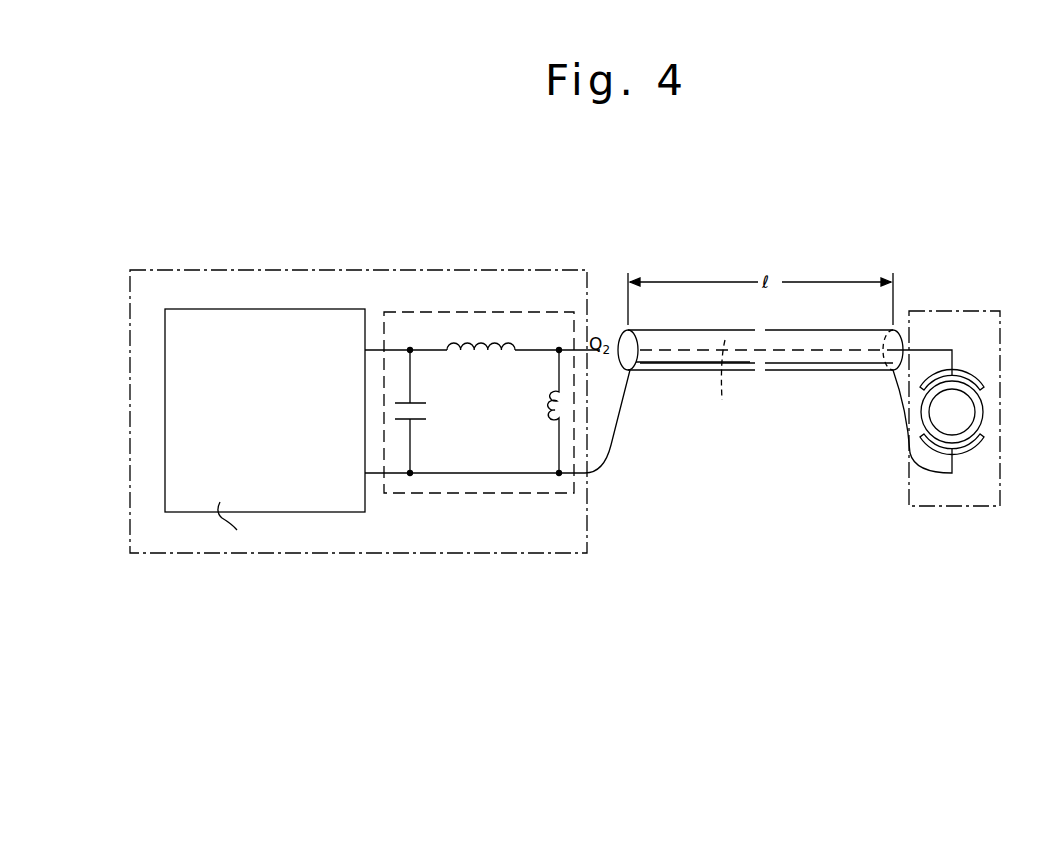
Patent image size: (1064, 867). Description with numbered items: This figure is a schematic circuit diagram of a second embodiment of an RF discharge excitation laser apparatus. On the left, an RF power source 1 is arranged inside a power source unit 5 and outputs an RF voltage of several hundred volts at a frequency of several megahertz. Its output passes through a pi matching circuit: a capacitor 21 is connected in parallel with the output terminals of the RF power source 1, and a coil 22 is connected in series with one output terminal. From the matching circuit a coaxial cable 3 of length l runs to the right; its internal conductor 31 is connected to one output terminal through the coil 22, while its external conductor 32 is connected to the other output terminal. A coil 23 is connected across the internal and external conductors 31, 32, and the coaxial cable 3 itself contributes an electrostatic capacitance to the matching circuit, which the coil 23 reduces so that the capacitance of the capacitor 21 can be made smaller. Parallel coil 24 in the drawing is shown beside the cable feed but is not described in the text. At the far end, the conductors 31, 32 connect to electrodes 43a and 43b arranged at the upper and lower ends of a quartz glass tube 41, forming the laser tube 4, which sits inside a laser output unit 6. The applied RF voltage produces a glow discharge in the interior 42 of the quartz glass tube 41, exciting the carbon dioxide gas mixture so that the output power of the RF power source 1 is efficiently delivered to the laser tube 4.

The RF power source 1 is at (250, 309).
The power source unit 5 is at (327, 270).
The laser output unit 6 is at (951, 309).
The capacitor 21 is at (422, 420).
The coil 22 is at (483, 345).
The inductor 24 is at (552, 411).
The coaxial cable 3 is at (760, 377).
The coil 23 is at (760, 377).
The internal conductor 31 is at (723, 382).
The external conductor 32 is at (690, 371).
The laser tube 4 is at (989, 403).
The quartz glass tube 41 is at (983, 414).
The interior of the quartz glass tube 42 is at (958, 415).
The electrode 43a is at (980, 383).
The electrode 43b is at (975, 446).